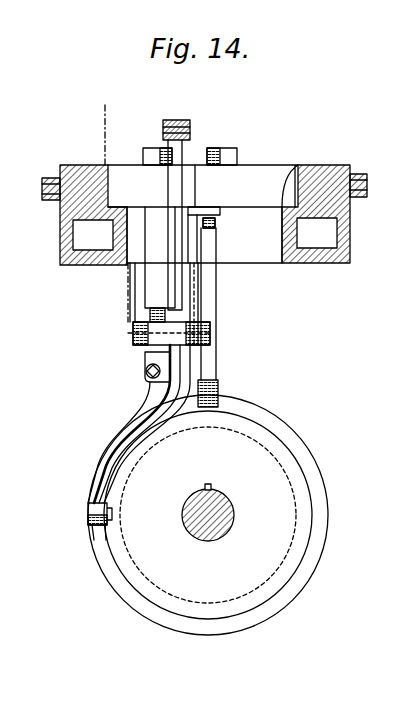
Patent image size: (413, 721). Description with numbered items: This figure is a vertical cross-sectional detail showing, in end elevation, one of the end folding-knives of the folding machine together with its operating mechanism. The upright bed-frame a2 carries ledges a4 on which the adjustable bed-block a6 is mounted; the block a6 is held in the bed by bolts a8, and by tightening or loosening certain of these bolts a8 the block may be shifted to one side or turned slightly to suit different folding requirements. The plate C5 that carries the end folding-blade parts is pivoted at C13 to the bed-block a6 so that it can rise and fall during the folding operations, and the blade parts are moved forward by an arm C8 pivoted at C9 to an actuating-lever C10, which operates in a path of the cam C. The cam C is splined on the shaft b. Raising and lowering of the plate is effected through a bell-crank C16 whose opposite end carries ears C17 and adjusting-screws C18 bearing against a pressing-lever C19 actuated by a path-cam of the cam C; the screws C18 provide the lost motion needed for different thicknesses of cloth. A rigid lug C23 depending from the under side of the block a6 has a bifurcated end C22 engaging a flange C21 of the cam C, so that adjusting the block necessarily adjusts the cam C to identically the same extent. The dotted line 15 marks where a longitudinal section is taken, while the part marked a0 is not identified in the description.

The bolts a8 is at (375, 185).
The upright bed-frame a2 is at (337, 165).
The ledges a4 is at (298, 168).
The adjustable block a6 is at (268, 173).
The casing cavity a0 is at (257, 200).
The arm C8 is at (172, 120).
The plate C5 is at (180, 172).
The pivot C13 is at (143, 153).
The pivot C9 is at (198, 152).
The actuating-lever C10 is at (214, 152).
The bell-crank C16 is at (170, 308).
The section line 15 is at (108, 104).
The rigid lug C23 is at (214, 320).
The bifurcated end C22 is at (218, 398).
The ears C17 is at (146, 372).
The adjusting-screws C18 is at (165, 388).
The pressing-lever C19 is at (140, 420).
The flange C21 is at (322, 520).
The cam C is at (293, 562).
The shaft b is at (210, 517).